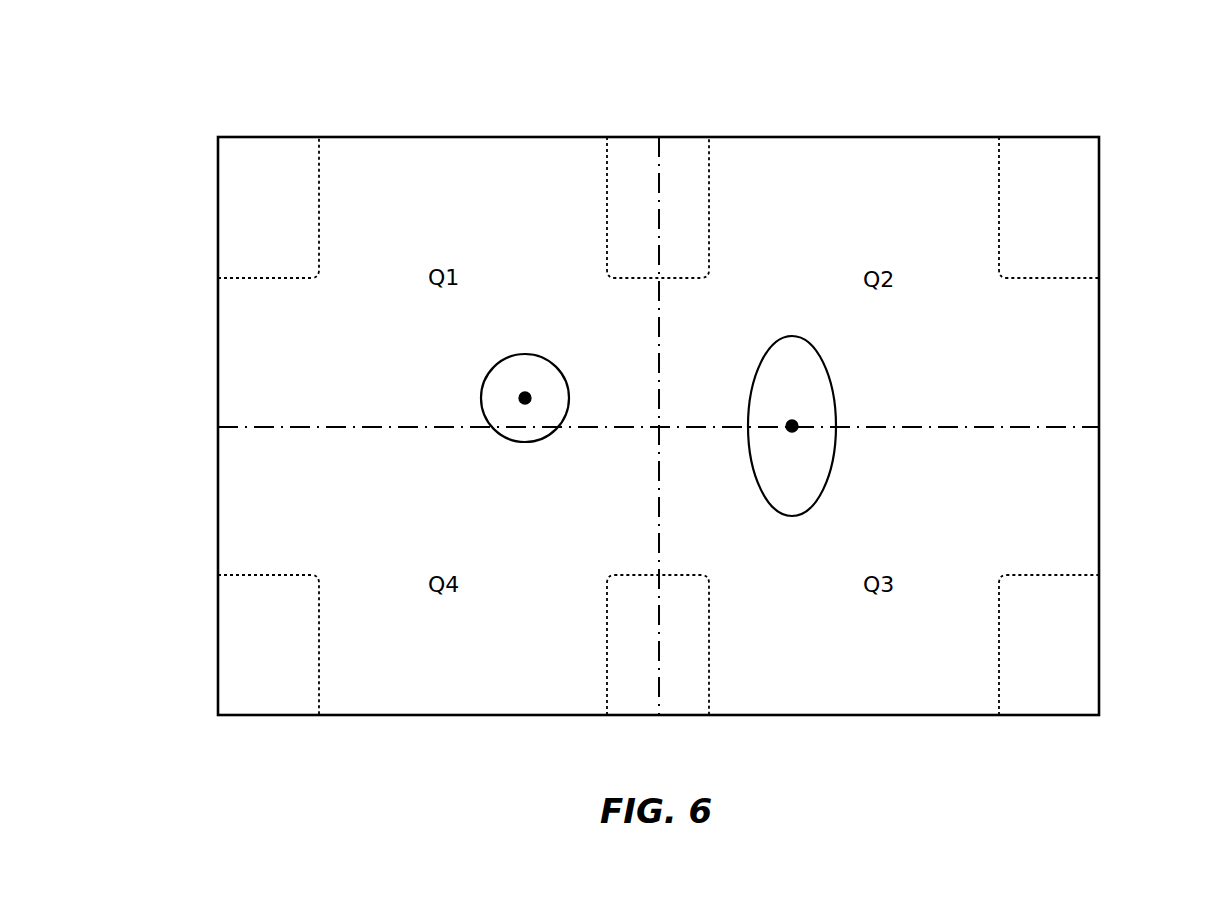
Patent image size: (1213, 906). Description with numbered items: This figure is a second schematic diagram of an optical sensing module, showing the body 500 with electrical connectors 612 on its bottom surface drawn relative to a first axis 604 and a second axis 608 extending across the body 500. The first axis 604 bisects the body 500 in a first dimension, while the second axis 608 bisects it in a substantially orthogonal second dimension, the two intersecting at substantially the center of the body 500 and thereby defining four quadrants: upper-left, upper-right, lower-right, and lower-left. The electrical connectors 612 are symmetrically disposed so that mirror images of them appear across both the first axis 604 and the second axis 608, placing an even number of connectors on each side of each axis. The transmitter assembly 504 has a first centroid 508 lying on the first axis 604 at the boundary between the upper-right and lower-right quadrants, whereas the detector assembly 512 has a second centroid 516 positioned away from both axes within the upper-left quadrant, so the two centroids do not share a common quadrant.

The body 500 is at (405, 137).
The transmitter assembly 504 is at (808, 515).
The first centroid 508 is at (792, 425).
The detector assembly 512 is at (525, 355).
The second centroid 516 is at (525, 397).
The first axis 604 is at (1043, 427).
The second axis 608 is at (659, 323).
The electrical connectors 612 is at (265, 153).